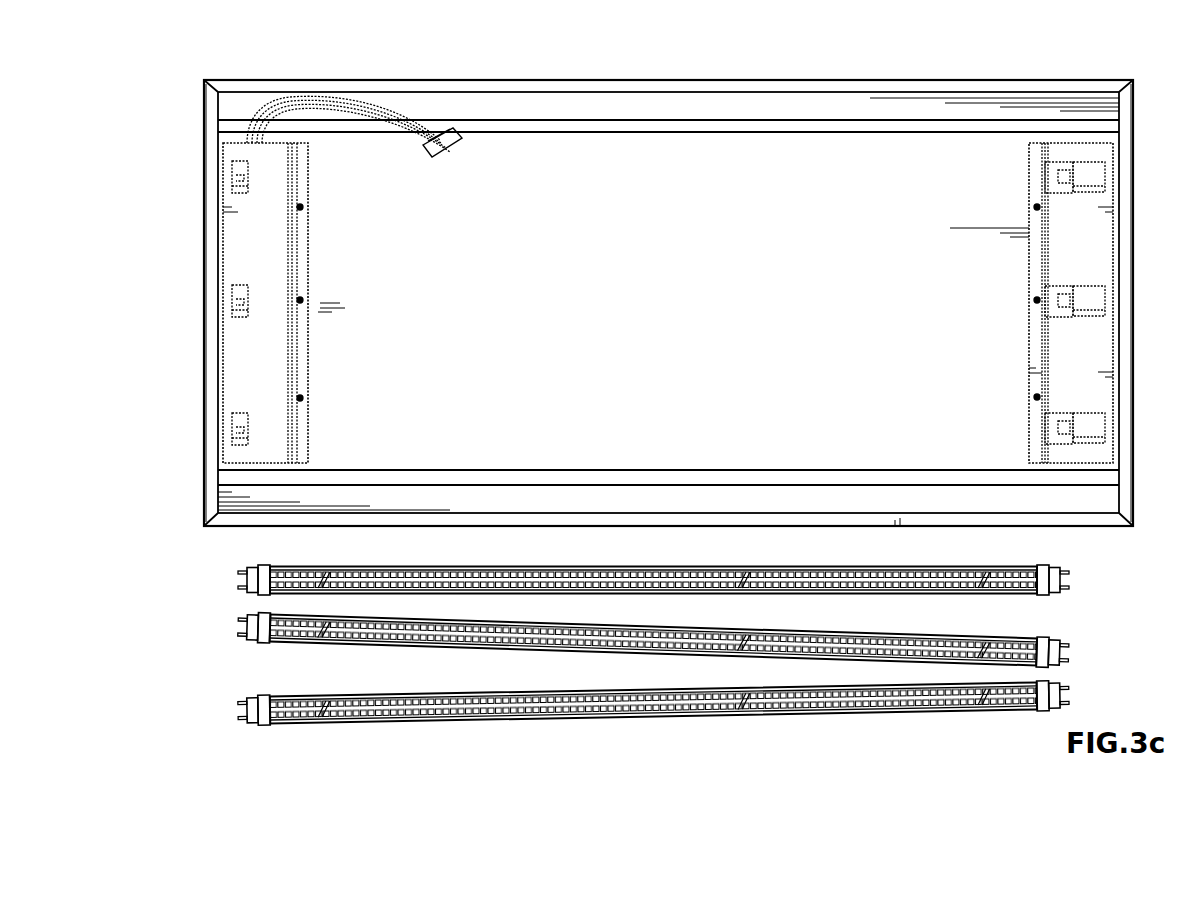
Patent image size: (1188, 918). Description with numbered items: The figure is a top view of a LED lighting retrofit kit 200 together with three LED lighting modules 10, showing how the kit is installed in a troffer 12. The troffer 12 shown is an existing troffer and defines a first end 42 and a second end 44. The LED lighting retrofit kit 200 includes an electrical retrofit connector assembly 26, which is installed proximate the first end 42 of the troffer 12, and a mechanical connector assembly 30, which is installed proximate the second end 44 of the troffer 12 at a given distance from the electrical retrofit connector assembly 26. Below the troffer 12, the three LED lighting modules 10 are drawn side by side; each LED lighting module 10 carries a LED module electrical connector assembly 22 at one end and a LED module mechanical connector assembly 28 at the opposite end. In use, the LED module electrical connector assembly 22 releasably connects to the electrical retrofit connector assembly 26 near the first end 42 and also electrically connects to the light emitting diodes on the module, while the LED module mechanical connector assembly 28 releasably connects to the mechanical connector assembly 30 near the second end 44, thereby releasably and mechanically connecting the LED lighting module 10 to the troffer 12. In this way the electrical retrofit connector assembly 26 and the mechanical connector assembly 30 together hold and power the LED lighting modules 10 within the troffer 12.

The LED lighting retrofit kit 200 is at (667, 283).
The troffer 12 is at (904, 80).
The first end of the troffer 42 is at (187, 98).
The second end of the troffer 44 is at (1150, 90).
The electrical retrofit connector assembly 26 is at (263, 167).
The mechanical connector assembly 30 is at (1084, 150).
The LED lighting module 10 is at (443, 580).
The LED module electrical connector assembly 22 is at (233, 707).
The LED module mechanical connector assembly 28 is at (1080, 585).